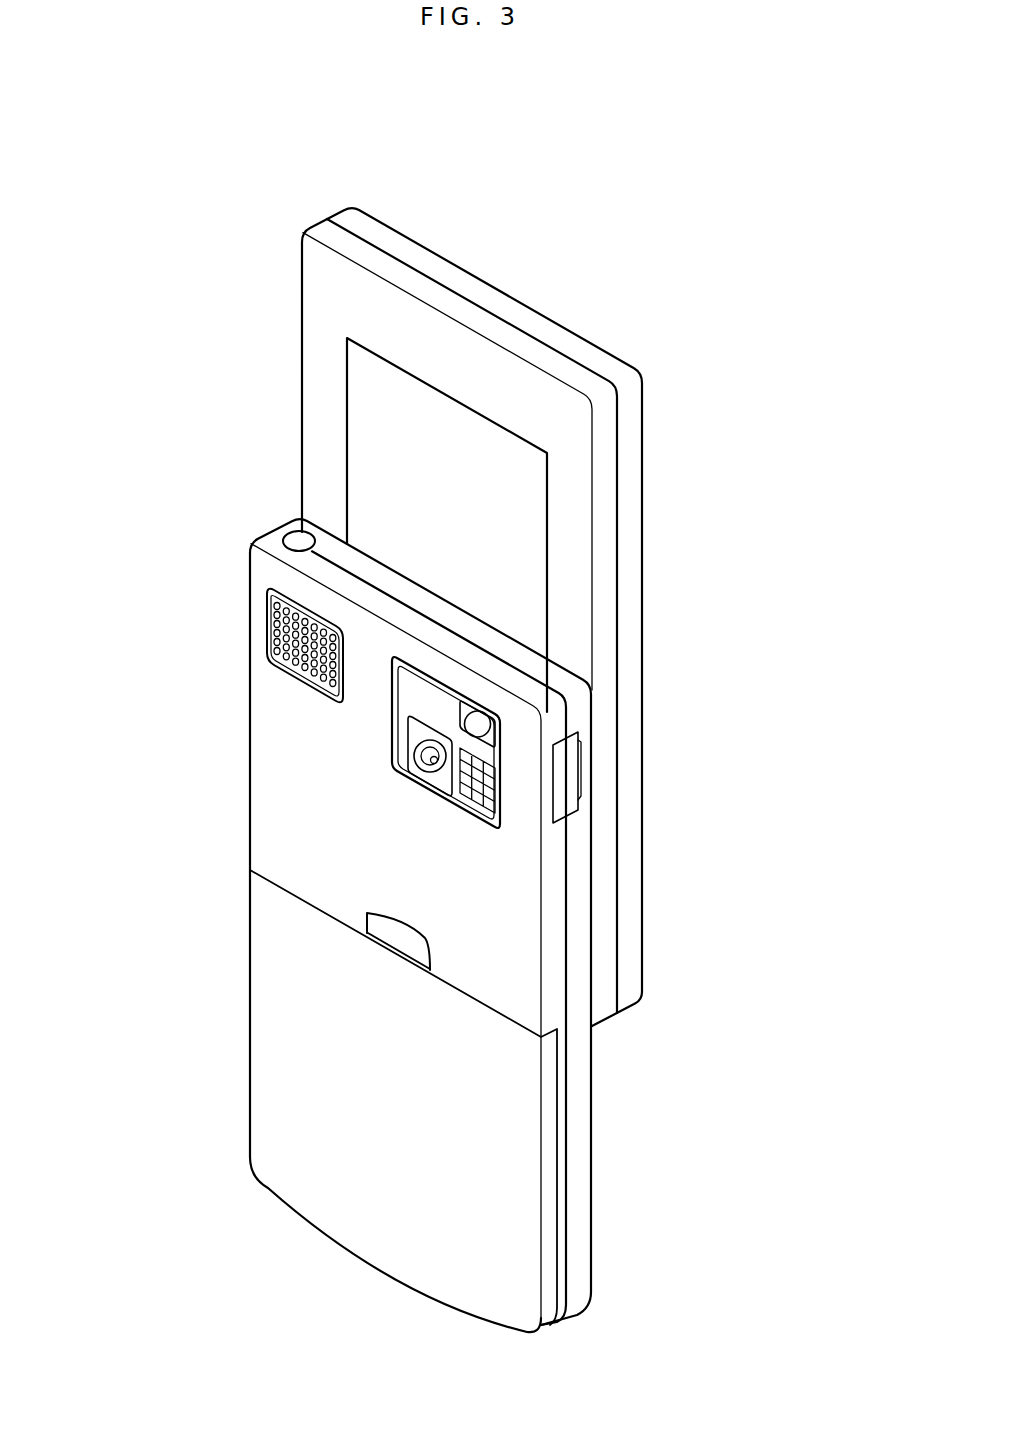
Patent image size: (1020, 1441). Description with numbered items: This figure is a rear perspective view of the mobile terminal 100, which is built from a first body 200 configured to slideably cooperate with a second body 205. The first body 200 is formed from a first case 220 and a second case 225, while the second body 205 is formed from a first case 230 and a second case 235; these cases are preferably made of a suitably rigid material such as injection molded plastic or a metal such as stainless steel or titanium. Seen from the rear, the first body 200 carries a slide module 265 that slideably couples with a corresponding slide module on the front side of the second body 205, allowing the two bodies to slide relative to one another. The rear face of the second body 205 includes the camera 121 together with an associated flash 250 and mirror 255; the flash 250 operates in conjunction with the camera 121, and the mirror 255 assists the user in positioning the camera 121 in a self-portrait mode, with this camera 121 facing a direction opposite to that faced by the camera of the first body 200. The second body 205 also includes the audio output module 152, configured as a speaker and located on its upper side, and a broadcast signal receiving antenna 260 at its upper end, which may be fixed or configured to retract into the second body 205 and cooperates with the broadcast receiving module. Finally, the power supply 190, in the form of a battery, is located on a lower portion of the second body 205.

The mobile terminal 100 is at (613, 252).
The first body 200 is at (263, 385).
The second body 205 is at (237, 766).
The first case 220 is at (352, 219).
The second case 225 is at (333, 237).
The slide module 265 is at (358, 472).
The broadcast signal receiving antenna 260 is at (292, 536).
The audio output module 152 is at (275, 633).
The flash 250 is at (497, 826).
The mirror 255 is at (483, 723).
The camera 121 is at (436, 752).
The power supply 190 is at (272, 979).
The second case 235 is at (553, 987).
The first case 230 is at (583, 1057).